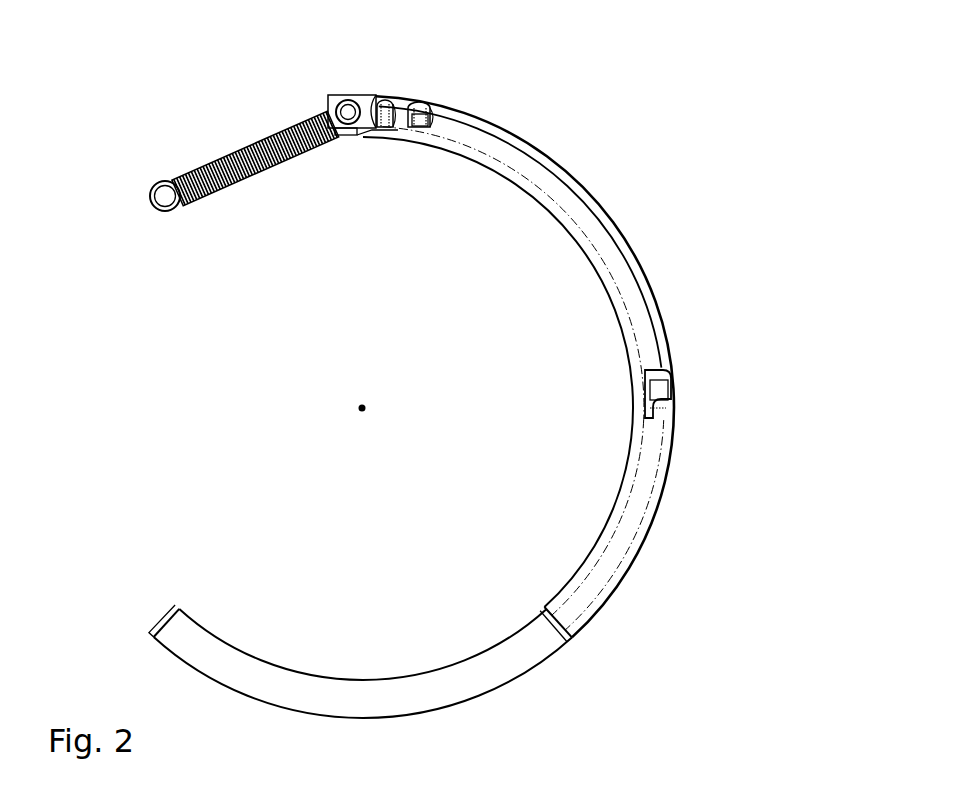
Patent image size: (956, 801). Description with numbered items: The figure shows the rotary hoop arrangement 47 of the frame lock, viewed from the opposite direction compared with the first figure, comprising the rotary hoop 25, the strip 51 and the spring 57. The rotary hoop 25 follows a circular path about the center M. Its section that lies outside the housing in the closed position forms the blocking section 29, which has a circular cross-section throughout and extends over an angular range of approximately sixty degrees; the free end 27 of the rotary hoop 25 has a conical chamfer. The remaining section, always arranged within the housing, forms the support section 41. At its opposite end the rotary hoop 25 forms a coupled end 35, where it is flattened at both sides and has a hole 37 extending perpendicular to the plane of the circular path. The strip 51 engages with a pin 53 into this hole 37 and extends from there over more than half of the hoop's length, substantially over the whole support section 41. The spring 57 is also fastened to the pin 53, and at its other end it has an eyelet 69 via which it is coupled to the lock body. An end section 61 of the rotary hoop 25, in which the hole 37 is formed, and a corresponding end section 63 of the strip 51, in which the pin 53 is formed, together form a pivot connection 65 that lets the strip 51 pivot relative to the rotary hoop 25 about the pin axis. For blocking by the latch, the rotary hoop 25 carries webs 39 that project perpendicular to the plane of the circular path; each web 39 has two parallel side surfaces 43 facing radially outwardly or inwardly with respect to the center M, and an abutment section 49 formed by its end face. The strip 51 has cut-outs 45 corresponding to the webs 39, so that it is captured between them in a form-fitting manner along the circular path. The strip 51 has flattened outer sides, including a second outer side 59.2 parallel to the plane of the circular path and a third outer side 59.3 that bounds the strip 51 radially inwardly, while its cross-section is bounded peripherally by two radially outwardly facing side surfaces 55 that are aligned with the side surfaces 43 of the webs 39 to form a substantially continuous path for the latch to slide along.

The rotary hoop 25 is at (360, 615).
The free end 27 is at (158, 605).
The blocking section 29 is at (360, 668).
The coupled end 35 is at (244, 181).
The hole 37 is at (318, 131).
The web 39 is at (374, 110).
The support section 41 is at (518, 368).
The side surface 43 is at (540, 217).
The cut-out 45 is at (540, 237).
The rotary hoop arrangement 47 is at (555, 368).
The abutment section 49 is at (397, 104).
The strip 51 is at (573, 215).
The pin 53 is at (347, 123).
The side surface 55 is at (565, 183).
The spring 57 is at (244, 185).
The second outer side 59.2 is at (622, 537).
The third outer side 59.3 is at (622, 482).
The end section 61 is at (356, 190).
The end section 63 is at (360, 157).
The pivot connection 65 is at (329, 131).
The eyelet 69 is at (177, 213).
The center M is at (367, 412).